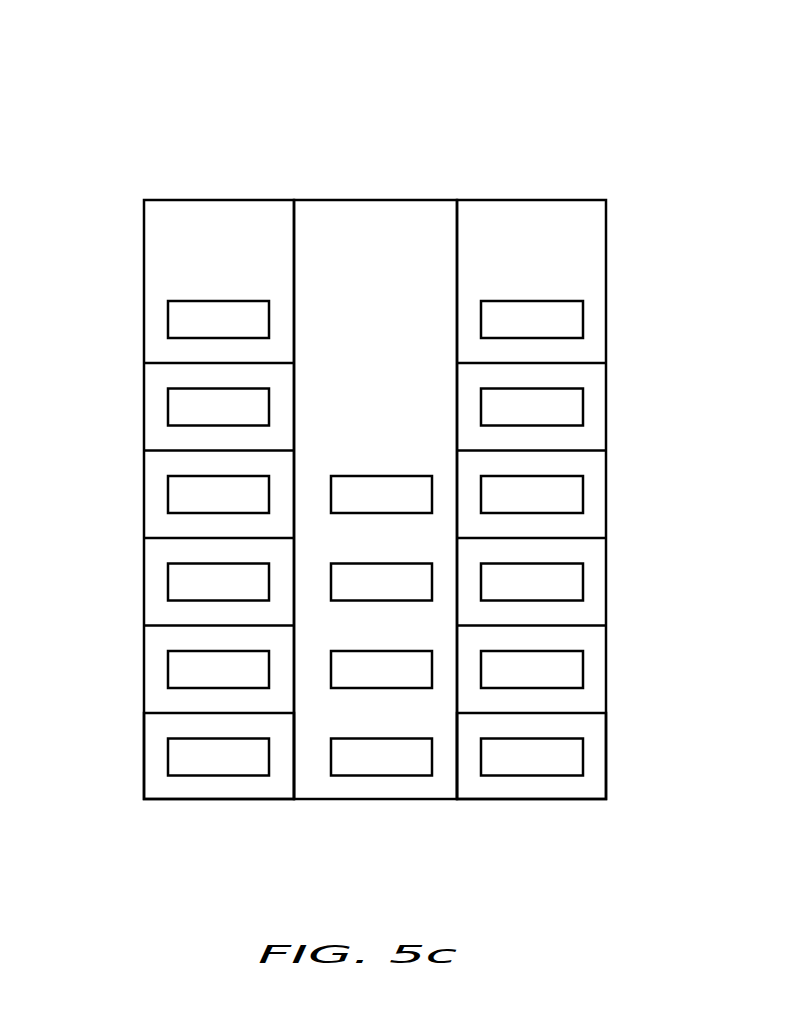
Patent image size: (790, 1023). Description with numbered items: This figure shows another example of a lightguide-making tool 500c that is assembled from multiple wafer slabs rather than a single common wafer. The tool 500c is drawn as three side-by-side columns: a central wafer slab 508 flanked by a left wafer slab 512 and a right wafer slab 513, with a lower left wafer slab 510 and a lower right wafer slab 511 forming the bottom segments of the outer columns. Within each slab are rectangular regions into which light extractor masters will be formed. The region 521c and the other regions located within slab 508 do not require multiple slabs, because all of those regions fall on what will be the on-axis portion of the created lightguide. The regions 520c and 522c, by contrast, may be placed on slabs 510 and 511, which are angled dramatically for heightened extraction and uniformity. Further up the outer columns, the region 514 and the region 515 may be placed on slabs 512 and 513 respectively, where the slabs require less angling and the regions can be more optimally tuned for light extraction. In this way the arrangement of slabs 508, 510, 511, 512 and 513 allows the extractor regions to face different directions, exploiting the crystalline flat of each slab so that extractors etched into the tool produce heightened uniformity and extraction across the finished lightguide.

The tool 500c is at (155, 66).
The wafer slab 512 is at (213, 213).
The wafer slab 508 is at (369, 213).
The wafer slab 513 is at (530, 213).
The region 514 is at (190, 319).
The region 515 is at (563, 319).
The wafer slab 510 is at (155, 727).
The wafer slab 511 is at (595, 729).
The region 520c is at (213, 760).
The region 521c is at (383, 760).
The region 522c is at (539, 758).